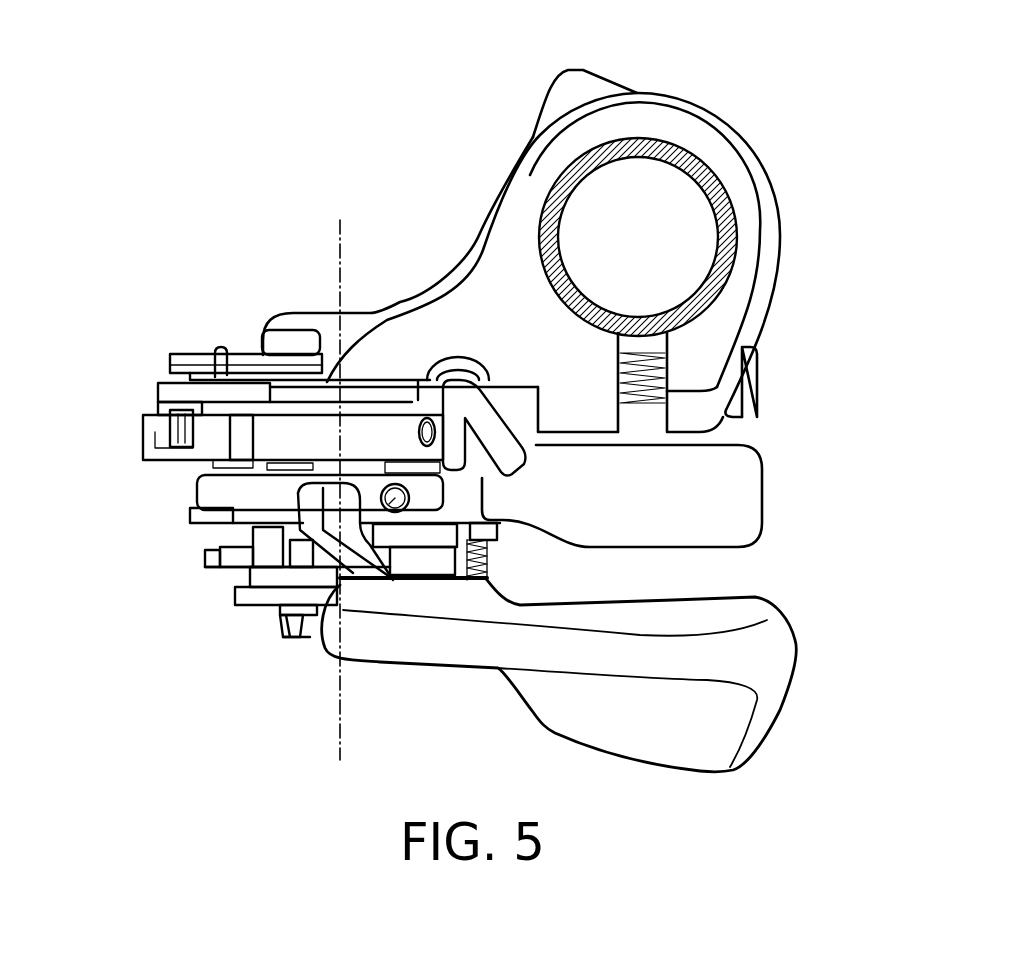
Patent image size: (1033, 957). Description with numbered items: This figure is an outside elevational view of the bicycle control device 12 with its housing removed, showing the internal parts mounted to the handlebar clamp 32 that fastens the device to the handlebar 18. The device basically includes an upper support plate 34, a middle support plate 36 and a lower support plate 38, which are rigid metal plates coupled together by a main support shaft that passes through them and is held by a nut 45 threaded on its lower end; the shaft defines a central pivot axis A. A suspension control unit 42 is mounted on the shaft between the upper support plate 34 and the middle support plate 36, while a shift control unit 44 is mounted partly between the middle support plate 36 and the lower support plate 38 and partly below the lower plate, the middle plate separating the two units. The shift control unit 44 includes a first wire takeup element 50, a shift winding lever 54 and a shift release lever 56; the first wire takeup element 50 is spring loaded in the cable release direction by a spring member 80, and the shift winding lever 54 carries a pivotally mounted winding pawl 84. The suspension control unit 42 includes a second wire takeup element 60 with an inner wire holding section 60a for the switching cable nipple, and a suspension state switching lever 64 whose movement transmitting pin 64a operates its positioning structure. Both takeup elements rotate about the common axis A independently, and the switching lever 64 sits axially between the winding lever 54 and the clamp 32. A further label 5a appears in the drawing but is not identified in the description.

The bicycle control device 12 is at (220, 230).
The handlebar 18 is at (727, 167).
The handlebar clamp 32 is at (685, 100).
The upper support plate 34 is at (168, 357).
The middle support plate 36 is at (466, 480).
The lower support plate 38 is at (193, 538).
The suspension control unit 42 is at (141, 431).
The shift control unit 44 is at (205, 590).
The nut 45 is at (300, 637).
The first wire takeup element 50 is at (195, 493).
The shift winding lever 54 is at (789, 714).
The shift release lever 56 is at (355, 572).
The second wire takeup element 60 is at (351, 380).
The inner wire holding section 60a is at (427, 418).
The suspension state switching lever 64 is at (766, 500).
The movement transmitting pin 64a is at (172, 433).
The spring member 80 is at (220, 350).
The winding pawl 84 is at (240, 668).
The pivot axle 5a is at (393, 580).
The central pivot axis A is at (345, 236).